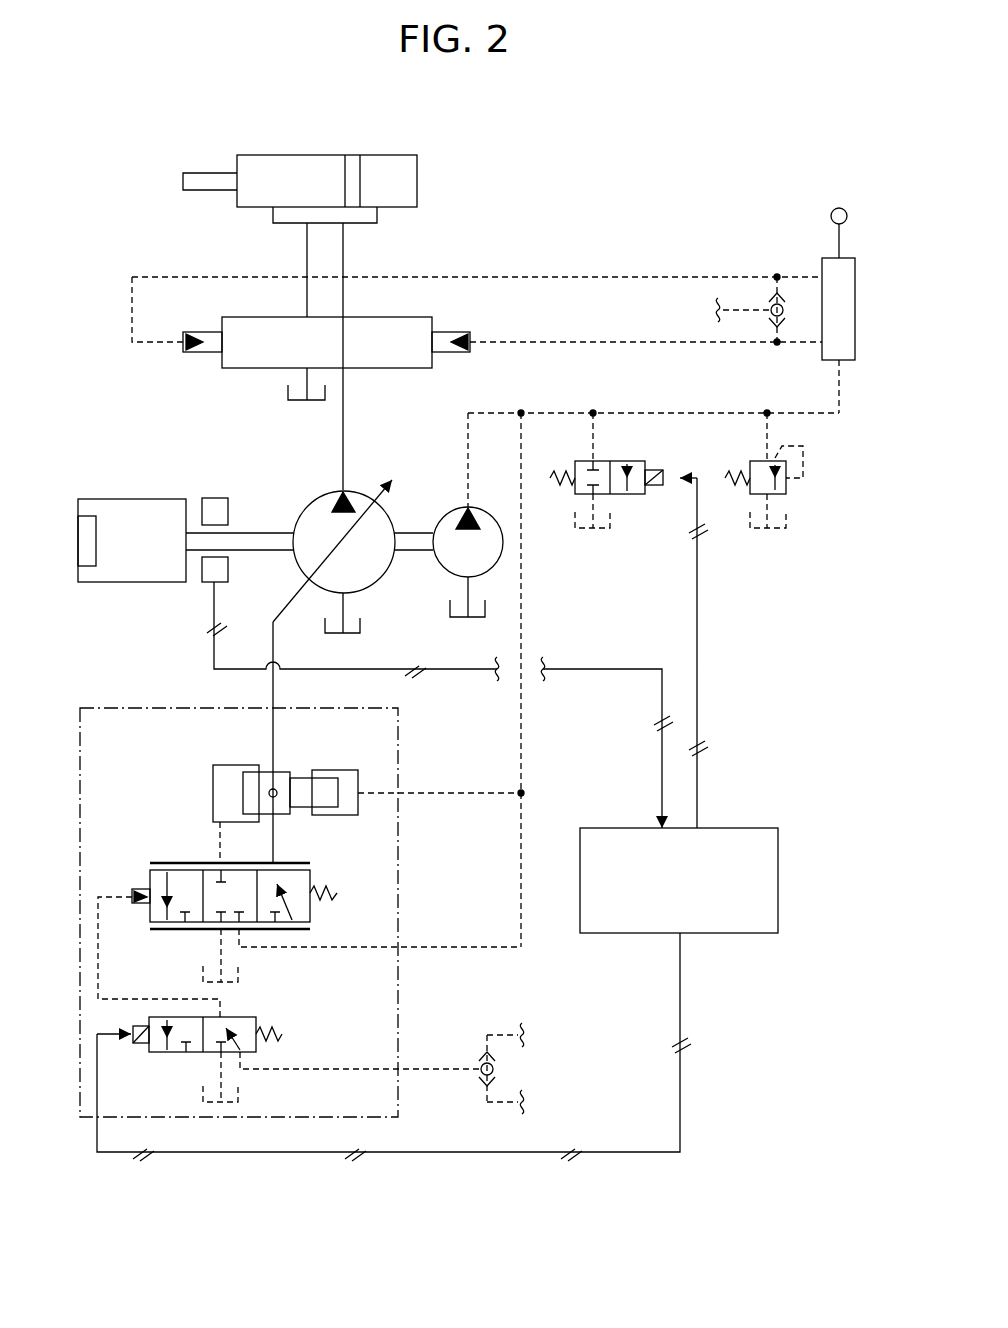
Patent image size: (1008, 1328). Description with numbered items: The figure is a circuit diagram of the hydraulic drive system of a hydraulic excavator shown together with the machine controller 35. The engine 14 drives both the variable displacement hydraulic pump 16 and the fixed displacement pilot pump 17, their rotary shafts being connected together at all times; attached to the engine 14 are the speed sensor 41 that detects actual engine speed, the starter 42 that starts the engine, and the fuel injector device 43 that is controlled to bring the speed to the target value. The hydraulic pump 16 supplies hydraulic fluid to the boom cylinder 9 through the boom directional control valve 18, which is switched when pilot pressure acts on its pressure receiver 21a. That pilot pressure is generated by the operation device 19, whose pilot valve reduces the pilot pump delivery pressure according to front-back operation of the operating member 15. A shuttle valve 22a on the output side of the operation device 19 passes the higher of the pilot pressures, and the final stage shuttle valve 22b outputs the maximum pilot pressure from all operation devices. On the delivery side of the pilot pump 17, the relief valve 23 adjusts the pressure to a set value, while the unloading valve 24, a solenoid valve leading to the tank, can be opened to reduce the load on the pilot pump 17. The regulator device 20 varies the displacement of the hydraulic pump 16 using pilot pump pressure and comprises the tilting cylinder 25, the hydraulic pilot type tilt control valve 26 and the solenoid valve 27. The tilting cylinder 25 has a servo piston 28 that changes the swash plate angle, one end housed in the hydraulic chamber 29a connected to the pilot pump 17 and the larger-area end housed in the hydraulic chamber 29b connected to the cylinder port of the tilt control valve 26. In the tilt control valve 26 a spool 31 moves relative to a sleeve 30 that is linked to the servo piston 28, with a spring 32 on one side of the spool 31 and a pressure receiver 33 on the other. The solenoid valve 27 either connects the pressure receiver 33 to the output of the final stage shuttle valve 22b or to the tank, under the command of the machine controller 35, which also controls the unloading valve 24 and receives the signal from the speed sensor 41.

The boom cylinder 9 is at (417, 180).
The engine 14 is at (138, 498).
The operating member 15 is at (840, 207).
The hydraulic pump 16 is at (318, 492).
The pilot pump 17 is at (452, 507).
The boom directional control valve 18 is at (255, 372).
The operation device 19 is at (825, 258).
The regulator device 20 is at (398, 748).
The pressure receiver 21a is at (200, 331).
The shuttle valve 22a is at (772, 298).
The final stage shuttle valve 22b is at (482, 1058).
The relief valve 23 is at (786, 488).
The unloading valve 24 is at (632, 496).
The tilting cylinder 25 is at (327, 790).
The tilt control valve 26 is at (309, 904).
The solenoid valve 27 is at (246, 1017).
The servo piston 28 is at (298, 780).
The hydraulic chamber 29a is at (342, 770).
The hydraulic chamber 29b is at (228, 765).
The sleeve 30 is at (290, 863).
The spool 31 is at (150, 874).
The spring 32 is at (335, 900).
The pressure receiver 33 is at (140, 904).
The machine controller 35 is at (778, 880).
The speed sensor 41 is at (205, 584).
The starter 42 is at (212, 498).
The fuel injector device 43 is at (90, 515).